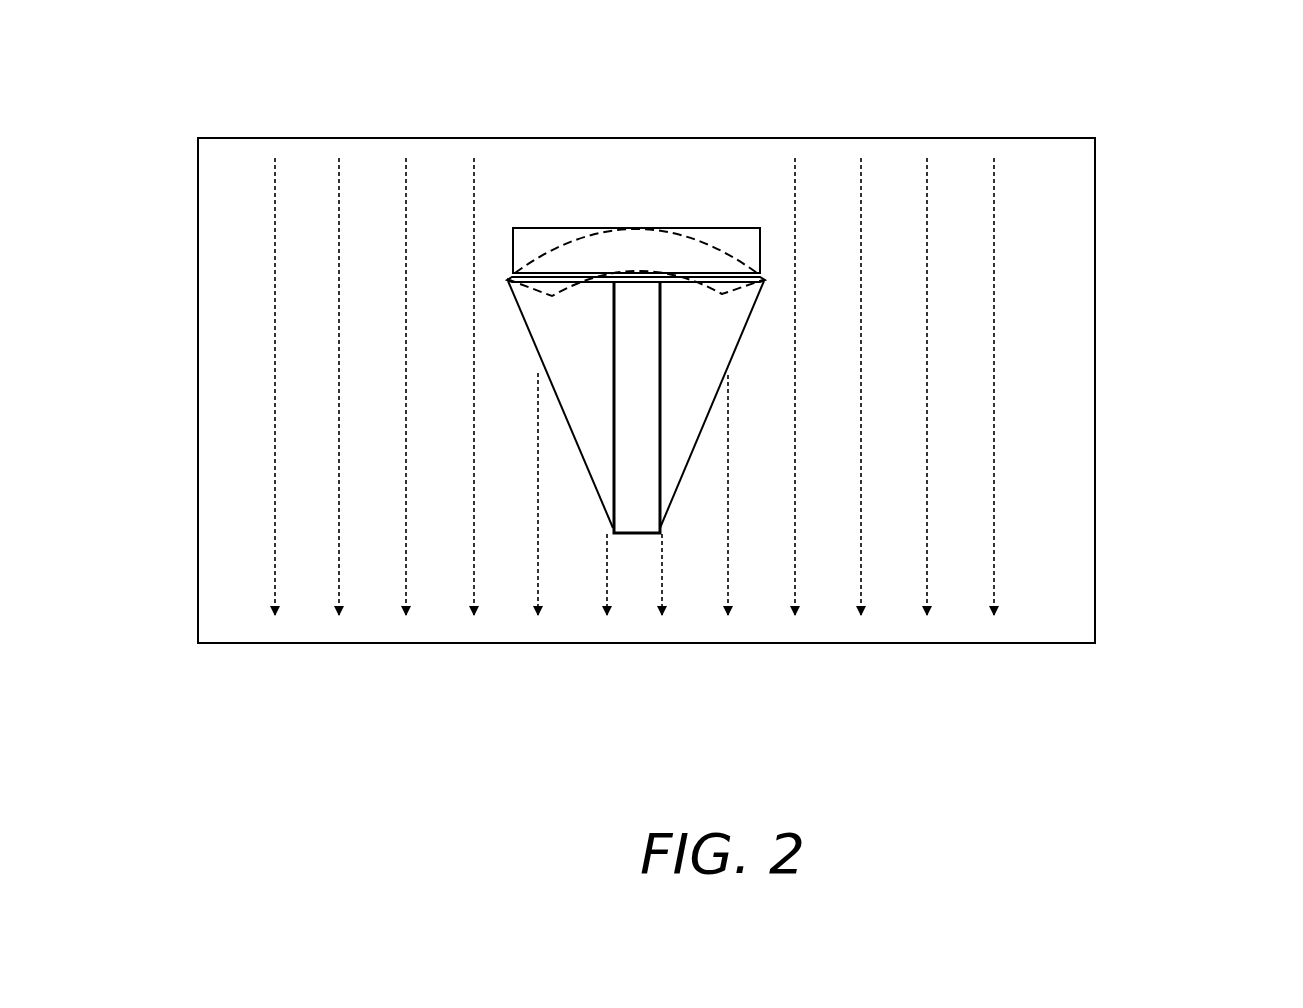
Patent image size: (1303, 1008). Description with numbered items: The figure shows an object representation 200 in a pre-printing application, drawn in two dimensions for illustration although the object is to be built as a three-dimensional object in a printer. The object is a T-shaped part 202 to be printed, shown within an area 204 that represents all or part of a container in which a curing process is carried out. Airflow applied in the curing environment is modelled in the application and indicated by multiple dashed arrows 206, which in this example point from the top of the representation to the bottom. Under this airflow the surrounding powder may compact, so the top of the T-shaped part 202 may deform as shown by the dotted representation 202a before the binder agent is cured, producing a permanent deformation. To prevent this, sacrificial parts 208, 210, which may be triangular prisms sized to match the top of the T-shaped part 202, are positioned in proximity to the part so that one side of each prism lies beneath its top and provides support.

The object representation 200 is at (375, 95).
The T-shaped part 202 is at (535, 232).
The dotted representation 202a is at (723, 292).
The area 204 is at (1100, 334).
The dashed arrows 206 is at (272, 215).
The sacrificial part 208 is at (597, 447).
The sacrificial part 210 is at (687, 433).